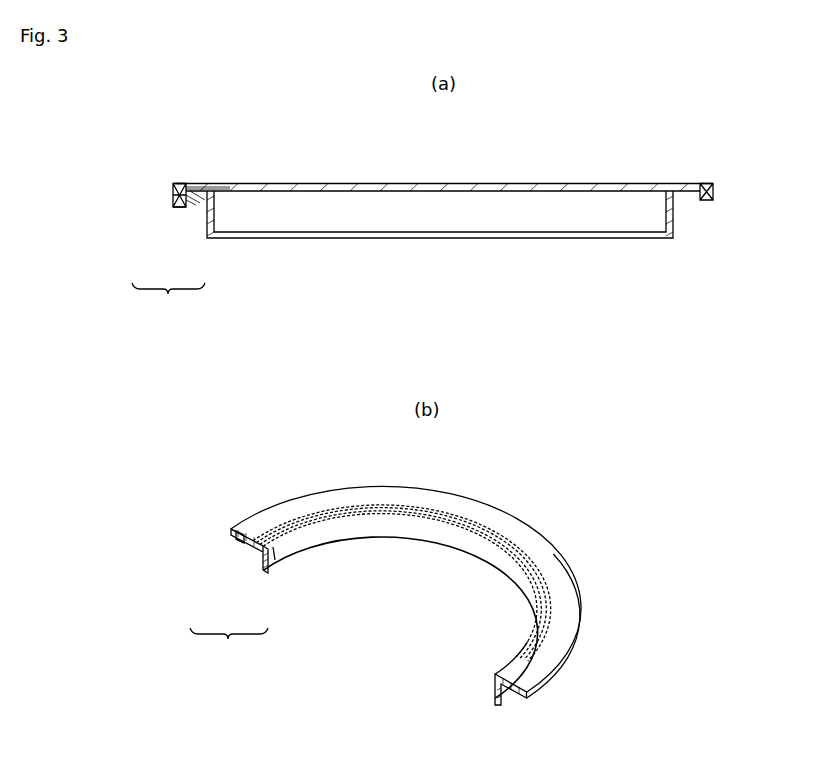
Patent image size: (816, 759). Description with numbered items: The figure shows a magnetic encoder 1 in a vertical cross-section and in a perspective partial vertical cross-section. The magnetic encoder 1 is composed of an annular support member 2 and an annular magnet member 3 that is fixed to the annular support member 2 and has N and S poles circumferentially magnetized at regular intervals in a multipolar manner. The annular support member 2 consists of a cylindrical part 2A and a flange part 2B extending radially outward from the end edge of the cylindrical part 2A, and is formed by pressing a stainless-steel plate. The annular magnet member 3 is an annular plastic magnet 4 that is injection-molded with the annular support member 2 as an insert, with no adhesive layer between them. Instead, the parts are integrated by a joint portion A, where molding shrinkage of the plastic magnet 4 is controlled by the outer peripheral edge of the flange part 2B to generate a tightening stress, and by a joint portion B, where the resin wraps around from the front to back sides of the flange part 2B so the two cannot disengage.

The magnetic encoder 1 is at (487, 184).
The annular support member 2 is at (200, 470).
The cylindrical part 2A is at (210, 200).
The flange part 2B is at (178, 208).
The annular magnet member 3 is at (212, 183).
The annular plastic magnet 4 is at (368, 392).
The joint portion resulting from molding shrinkage A is at (174, 189).
The joint portion resulting from wrap-around form B is at (187, 200).